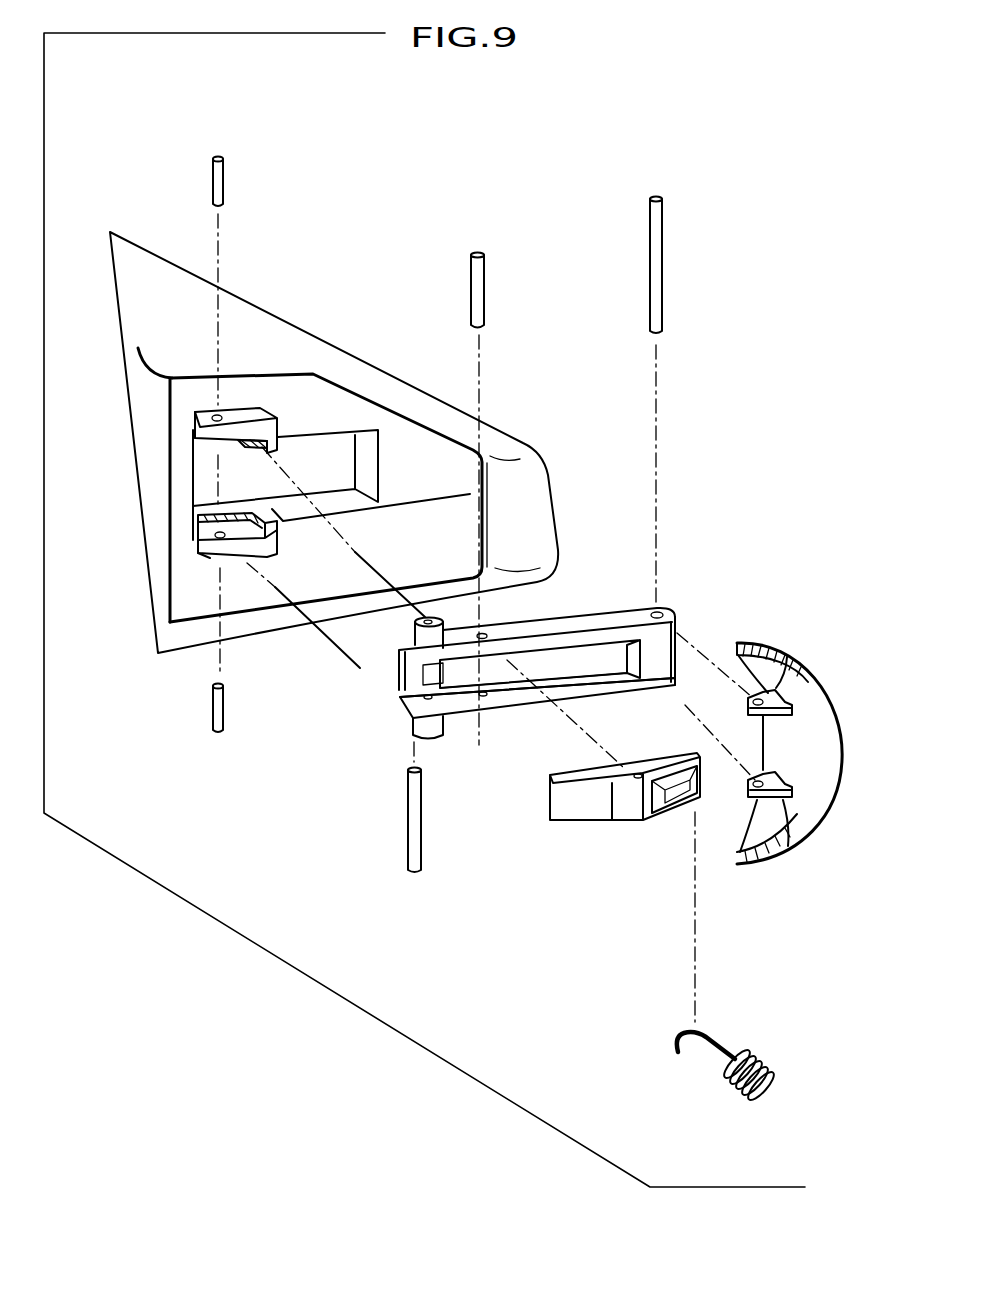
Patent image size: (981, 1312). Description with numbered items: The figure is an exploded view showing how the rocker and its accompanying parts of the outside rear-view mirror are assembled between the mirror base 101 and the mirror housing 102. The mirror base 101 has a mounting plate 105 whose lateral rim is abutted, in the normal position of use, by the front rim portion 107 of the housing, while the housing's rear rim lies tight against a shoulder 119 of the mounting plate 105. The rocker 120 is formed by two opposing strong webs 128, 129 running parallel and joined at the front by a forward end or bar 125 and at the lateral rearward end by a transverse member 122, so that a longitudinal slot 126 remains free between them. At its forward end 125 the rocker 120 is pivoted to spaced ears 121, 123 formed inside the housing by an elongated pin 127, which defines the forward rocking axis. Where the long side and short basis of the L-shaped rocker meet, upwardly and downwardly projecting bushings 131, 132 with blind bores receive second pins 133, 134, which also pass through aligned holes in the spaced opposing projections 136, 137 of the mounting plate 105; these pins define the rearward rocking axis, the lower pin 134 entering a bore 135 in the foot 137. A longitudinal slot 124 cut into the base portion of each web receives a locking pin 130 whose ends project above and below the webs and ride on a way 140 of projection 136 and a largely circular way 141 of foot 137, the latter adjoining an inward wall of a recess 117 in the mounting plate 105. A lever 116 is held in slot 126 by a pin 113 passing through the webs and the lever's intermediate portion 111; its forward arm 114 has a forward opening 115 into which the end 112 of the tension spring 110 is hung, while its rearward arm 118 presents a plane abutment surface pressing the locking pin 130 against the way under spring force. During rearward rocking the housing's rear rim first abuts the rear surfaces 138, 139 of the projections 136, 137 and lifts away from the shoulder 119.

The mirror base 101 is at (104, 257).
The mirror housing 102 is at (827, 810).
The mounting plate 105 is at (310, 390).
The front rim portion 107 is at (802, 737).
The tension spring 110 is at (755, 1038).
The intermediate portion 111 is at (620, 817).
The spring end 112 is at (697, 1032).
The pin 113 is at (470, 285).
The forward arm 114 is at (662, 826).
The forward opening 115 is at (670, 800).
The lever 116 is at (642, 760).
The recess 117 is at (338, 450).
The rearward arm 118 is at (633, 808).
The shoulder 119 is at (187, 477).
The rocker 120 is at (509, 667).
The ear 121 is at (787, 690).
The transverse member 122 is at (390, 665).
The ear 123 is at (783, 835).
The longitudinal slot 124 is at (402, 713).
The forward end 125 is at (667, 637).
The longitudinal slot 126 is at (590, 657).
The elongated pin 127 is at (648, 280).
The web 128 is at (623, 620).
The web 129 is at (598, 690).
The locking pin 130 is at (407, 823).
The bushing 131 is at (345, 652).
The bushing 132 is at (410, 730).
The second pin 133 is at (207, 177).
The second pin 134 is at (210, 715).
The bore 135 is at (195, 305).
The projection 136 is at (188, 432).
The foot projection 137 is at (205, 560).
The rear surface 138 is at (195, 427).
The rear surface 139 is at (197, 555).
The way 140 is at (258, 410).
The way 141 is at (203, 532).